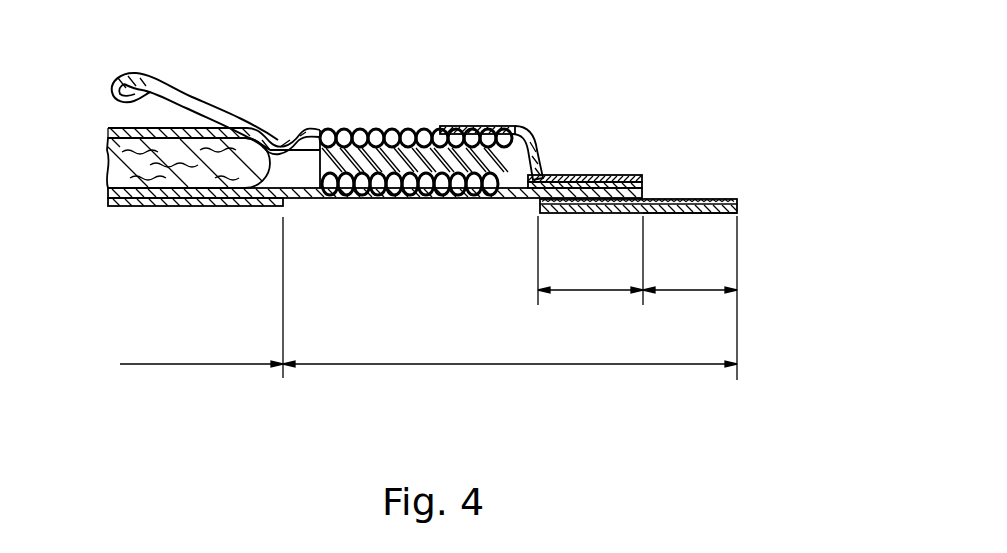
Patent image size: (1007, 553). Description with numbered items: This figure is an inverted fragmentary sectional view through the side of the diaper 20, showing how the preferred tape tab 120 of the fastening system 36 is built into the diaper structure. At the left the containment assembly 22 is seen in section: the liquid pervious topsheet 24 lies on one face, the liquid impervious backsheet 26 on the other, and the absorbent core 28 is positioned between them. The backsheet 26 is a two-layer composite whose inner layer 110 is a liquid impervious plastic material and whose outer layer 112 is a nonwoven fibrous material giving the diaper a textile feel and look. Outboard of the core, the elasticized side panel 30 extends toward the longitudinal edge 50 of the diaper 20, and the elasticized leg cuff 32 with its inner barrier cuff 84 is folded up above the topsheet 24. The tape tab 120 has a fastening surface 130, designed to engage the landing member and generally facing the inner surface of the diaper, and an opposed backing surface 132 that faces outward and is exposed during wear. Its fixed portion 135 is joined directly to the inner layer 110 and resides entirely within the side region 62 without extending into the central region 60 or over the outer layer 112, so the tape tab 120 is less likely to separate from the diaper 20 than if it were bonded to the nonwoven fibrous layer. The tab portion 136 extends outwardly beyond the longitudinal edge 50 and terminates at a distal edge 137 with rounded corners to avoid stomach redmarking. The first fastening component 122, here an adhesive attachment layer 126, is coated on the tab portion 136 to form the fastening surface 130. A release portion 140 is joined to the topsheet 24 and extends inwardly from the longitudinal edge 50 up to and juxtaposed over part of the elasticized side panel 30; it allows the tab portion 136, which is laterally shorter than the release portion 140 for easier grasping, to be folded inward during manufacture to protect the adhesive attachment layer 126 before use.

The diaper 20 is at (463, 75).
The containment assembly 22 is at (97, 158).
The topsheet 24 is at (112, 128).
The backsheet 26 is at (298, 217).
The absorbent core 28 is at (112, 180).
The elasticized side panel 30 is at (352, 128).
The elasticized leg cuff 32 is at (205, 85).
The inner barrier cuff 84 is at (167, 83).
The fastening system 36 is at (596, 137).
The tape tab 120 is at (572, 175).
The longitudinal edge 50 is at (643, 190).
The central region 60 is at (190, 365).
The side region 62 is at (510, 365).
The inner layer 110 is at (233, 197).
The outer layer 112 is at (147, 207).
The first fastening component 122 is at (715, 194).
The adhesive attachment layer 126 is at (735, 199).
The fastening surface 130 is at (682, 198).
The backing surface 132 is at (712, 213).
The fixed portion 135 is at (592, 292).
The tab portion 136 is at (697, 292).
The distal edge 137 is at (738, 208).
The release portion 140 is at (470, 127).